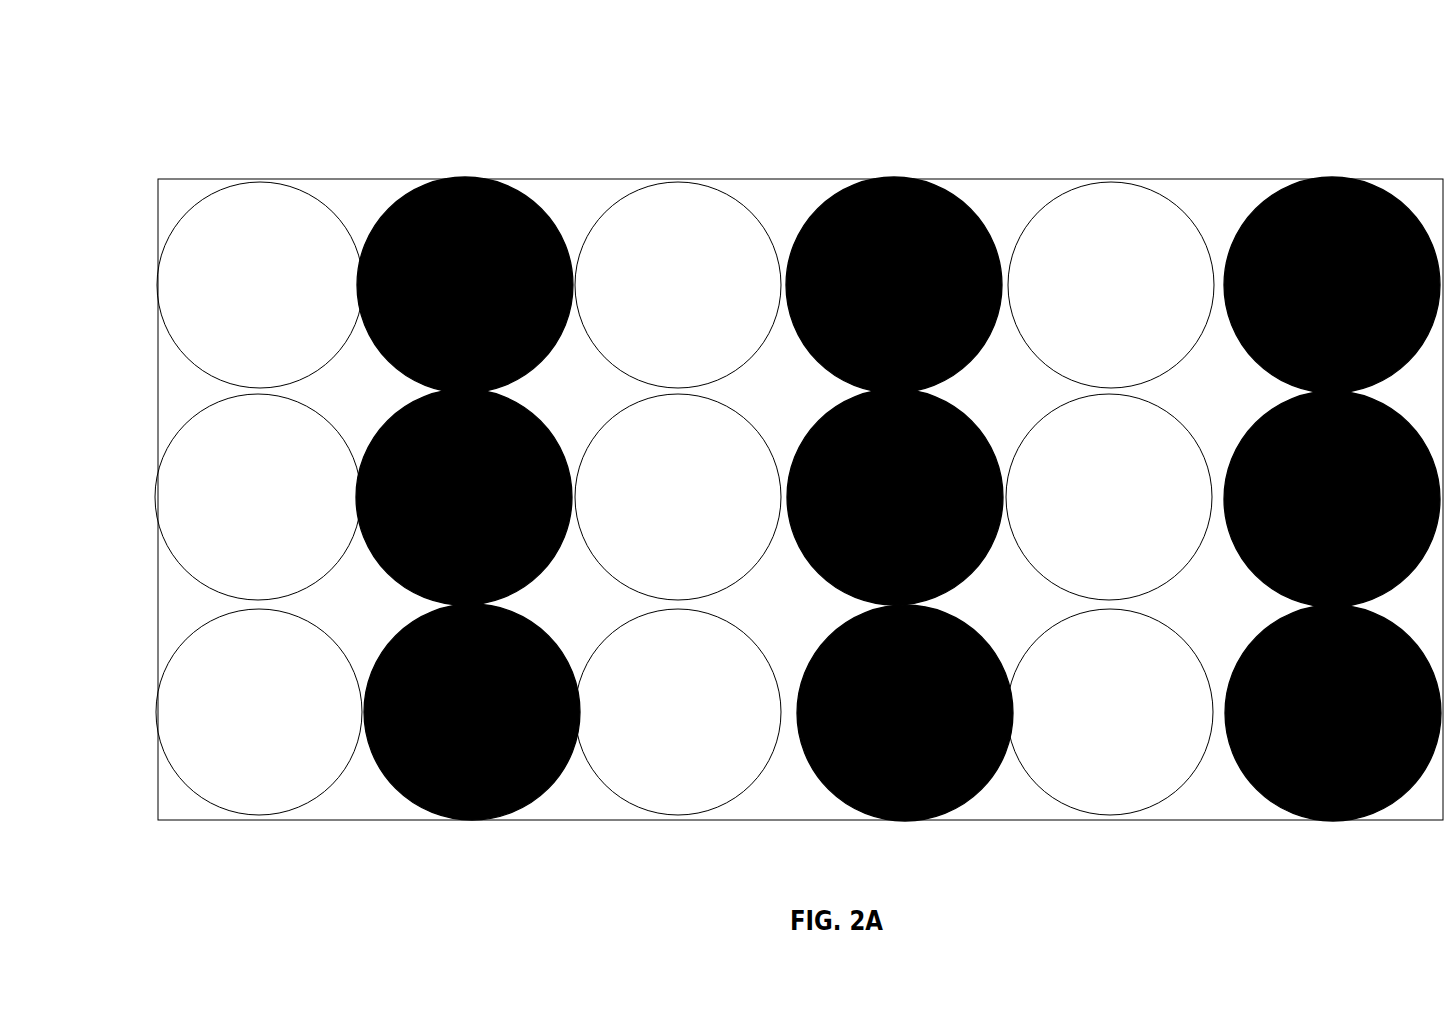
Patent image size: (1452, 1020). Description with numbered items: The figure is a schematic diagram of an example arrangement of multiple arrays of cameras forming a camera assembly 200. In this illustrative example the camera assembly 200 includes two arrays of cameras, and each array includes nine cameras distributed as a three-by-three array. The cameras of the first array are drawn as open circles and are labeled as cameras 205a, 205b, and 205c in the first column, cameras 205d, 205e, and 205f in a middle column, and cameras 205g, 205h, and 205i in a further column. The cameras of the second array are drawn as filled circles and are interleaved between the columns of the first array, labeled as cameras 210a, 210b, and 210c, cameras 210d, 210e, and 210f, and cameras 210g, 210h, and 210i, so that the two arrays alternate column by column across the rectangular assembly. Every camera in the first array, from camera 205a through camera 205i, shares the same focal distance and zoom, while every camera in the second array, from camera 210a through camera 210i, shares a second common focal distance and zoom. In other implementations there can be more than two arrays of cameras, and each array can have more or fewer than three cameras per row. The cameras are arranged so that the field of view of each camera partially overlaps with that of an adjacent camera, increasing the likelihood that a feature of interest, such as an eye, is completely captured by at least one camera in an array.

The camera assembly 200 is at (695, 80).
The camera of the first array 205a is at (207, 183).
The camera of the first array 205b is at (168, 422).
The camera of the first array 205c is at (192, 622).
The camera of the first array 205d is at (607, 200).
The camera of the first array 205e is at (637, 425).
The camera of the first array 205f is at (640, 650).
The camera of the first array 205g is at (1043, 205).
The camera of the first array 205h is at (1065, 430).
The camera of the first array 205i is at (1063, 650).
The camera of the second array 210a is at (388, 193).
The camera of the second array 210b is at (382, 405).
The camera of the second array 210c is at (392, 627).
The camera of the second array 210d is at (812, 195).
The camera of the second array 210e is at (803, 415).
The camera of the second array 210f is at (810, 635).
The camera of the second array 210g is at (1273, 180).
The camera of the second array 210h is at (1237, 423).
The camera of the second array 210i is at (1230, 640).